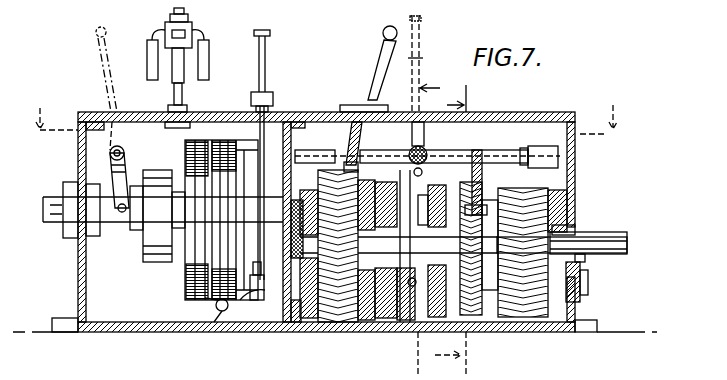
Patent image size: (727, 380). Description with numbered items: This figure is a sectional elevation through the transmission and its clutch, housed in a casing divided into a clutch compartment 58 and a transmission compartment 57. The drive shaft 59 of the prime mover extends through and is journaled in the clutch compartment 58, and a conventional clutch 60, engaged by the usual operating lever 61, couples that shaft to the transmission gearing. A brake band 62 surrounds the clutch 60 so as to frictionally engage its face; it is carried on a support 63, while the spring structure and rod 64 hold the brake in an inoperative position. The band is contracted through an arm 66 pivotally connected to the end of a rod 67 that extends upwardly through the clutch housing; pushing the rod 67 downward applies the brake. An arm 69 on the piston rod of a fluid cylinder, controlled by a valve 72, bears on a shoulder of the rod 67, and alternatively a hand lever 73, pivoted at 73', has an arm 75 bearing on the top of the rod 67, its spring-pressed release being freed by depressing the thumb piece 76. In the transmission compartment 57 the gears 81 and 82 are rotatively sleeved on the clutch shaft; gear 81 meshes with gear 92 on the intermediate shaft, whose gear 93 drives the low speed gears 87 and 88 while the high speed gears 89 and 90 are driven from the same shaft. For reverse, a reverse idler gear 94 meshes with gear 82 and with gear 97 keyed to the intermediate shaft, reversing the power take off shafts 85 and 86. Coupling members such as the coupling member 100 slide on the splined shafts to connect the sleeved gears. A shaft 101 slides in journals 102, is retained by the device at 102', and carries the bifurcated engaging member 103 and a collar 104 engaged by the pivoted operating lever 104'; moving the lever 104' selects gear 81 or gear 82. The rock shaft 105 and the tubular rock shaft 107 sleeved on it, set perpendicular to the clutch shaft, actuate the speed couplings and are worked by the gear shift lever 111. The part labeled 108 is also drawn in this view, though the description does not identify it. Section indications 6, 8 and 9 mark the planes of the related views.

The section line 6- 6 is at (325, 111).
The section line 8- 8 is at (437, 88).
The section line 9- 9 is at (442, 230).
The transmission compartment 57 is at (577, 178).
The clutch compartment 58 is at (80, 164).
The drive shaft 59 is at (43, 204).
The clutch 60 is at (195, 150).
The operating lever 61 is at (106, 86).
The brake band 62 is at (210, 298).
The brake band support 63 is at (186, 112).
The spring structure and rod 64 is at (220, 325).
The arm 66 is at (242, 322).
The rod 67 is at (284, 222).
The arm 69 is at (258, 300).
The valve 72 is at (194, 33).
The hand lever 73 is at (277, 158).
The pivot 73' is at (245, 99).
The arm 75 is at (274, 96).
The thumb piece 76 is at (271, 33).
The gear 81 is at (407, 63).
The gear 82 is at (572, 192).
The power take off shaft 85 is at (615, 232).
The power take off shaft 86 is at (628, 250).
The low speed gear 87 is at (320, 318).
The low speed gear 88 is at (346, 318).
The high speed gear 89 is at (458, 320).
The high speed gear 90 is at (490, 320).
The gear 92 is at (386, 318).
The gear 93 is at (297, 322).
The reverse idler gear 94 is at (578, 214).
The gear 97 is at (581, 288).
The coupling member 100 is at (394, 321).
The shaft 101 is at (490, 152).
The journals 102 is at (449, 148).
The retaining device 102' is at (530, 147).
The bifurcated engaging member 103 is at (470, 152).
The collar 104 is at (366, 147).
The operating lever 104' is at (361, 69).
The rock shaft 105 is at (432, 176).
The tubular rock shaft 107 is at (421, 150).
The gear shaft 108 is at (415, 322).
The gear shift lever 111 is at (420, 57).